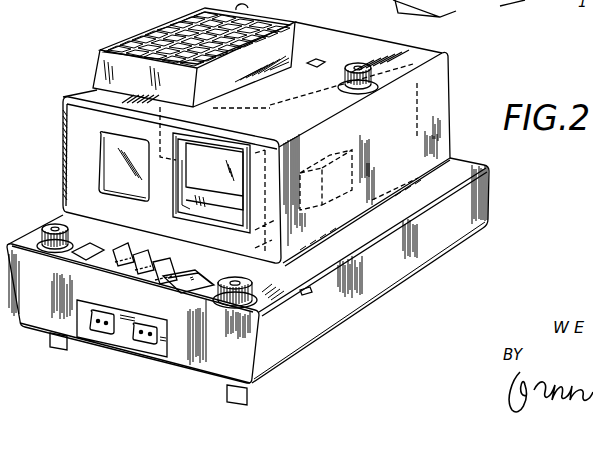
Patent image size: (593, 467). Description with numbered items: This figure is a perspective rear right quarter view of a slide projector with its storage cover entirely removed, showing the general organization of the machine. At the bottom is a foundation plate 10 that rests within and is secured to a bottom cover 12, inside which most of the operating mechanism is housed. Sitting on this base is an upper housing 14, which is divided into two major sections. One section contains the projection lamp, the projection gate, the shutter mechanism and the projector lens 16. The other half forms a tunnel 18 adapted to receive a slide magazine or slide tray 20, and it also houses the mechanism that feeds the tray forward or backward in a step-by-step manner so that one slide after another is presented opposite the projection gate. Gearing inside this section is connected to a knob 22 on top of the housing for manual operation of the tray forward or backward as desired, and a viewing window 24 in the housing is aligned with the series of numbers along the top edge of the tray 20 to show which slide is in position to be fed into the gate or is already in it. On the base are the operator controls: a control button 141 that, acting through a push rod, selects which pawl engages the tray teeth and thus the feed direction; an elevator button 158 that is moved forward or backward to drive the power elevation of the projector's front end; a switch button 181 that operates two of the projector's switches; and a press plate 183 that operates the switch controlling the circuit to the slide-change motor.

The foundation plate 10 is at (457, 157).
The bottom cover 12 is at (190, 370).
The upper housing 14 is at (78, 91).
The projector lens 16 is at (330, 30).
The tunnel 18 is at (185, 174).
The slide tray 20 is at (215, 174).
The knob 22 is at (372, 72).
The viewing window 24 is at (313, 62).
The press plate 183 is at (77, 250).
The elevator button 158 is at (98, 257).
The control button 141 is at (132, 262).
The switch button 181 is at (149, 272).